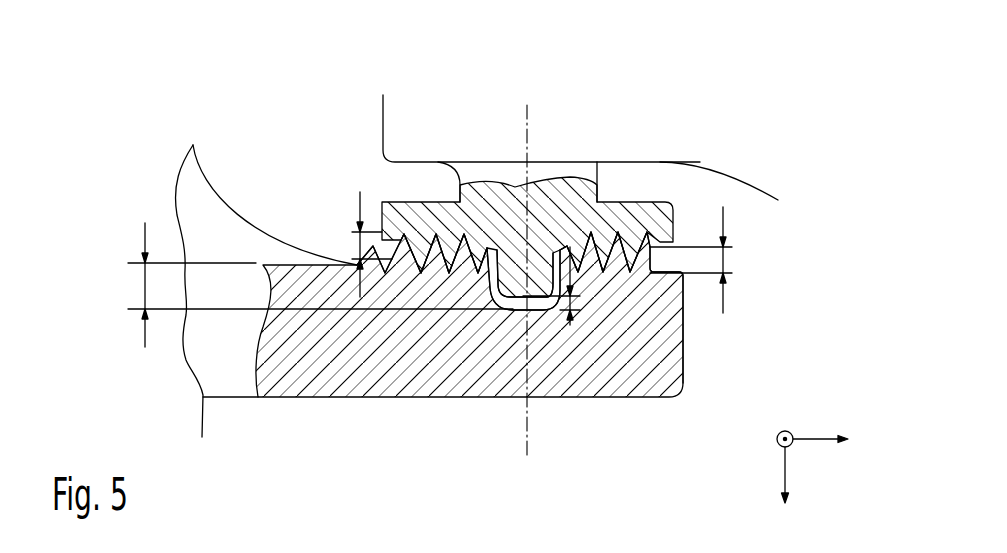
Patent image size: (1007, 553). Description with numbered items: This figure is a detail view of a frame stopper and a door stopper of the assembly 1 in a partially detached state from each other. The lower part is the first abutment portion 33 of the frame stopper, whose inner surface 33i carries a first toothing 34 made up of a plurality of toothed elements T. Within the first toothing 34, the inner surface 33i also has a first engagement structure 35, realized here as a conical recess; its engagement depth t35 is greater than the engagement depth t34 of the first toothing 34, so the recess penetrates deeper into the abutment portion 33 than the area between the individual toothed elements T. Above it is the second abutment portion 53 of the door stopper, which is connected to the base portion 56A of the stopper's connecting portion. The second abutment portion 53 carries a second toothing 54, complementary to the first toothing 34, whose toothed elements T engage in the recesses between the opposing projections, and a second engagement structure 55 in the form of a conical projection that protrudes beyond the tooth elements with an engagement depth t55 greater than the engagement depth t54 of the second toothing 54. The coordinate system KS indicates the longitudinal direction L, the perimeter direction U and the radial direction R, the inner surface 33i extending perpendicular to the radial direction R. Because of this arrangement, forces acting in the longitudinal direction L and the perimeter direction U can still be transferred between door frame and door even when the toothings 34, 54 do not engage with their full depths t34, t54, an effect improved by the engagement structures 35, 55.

The connector assembly 1 is at (757, 78).
The abutment portion 33 is at (296, 378).
The inner surface 33i is at (289, 258).
The first toothing 34 is at (645, 237).
The first engagement structure 35 is at (523, 311).
The second abutment portion 53 is at (407, 213).
The second toothing 54 is at (672, 236).
The second engagement structure 55 is at (513, 267).
The base portion 56A is at (386, 110).
The toothed elements T is at (447, 237).
The engagement depth of the first toothing t34 is at (724, 260).
The engagement depth of the first engagement structure t35 is at (143, 287).
The engagement depth of the second toothing t54 is at (358, 197).
The engagement depth of the second engagement structure t55 is at (578, 270).
The coordinate system KS is at (763, 463).
The perimeter direction U is at (775, 435).
The longitudinal direction L is at (812, 439).
The radial direction R is at (787, 467).